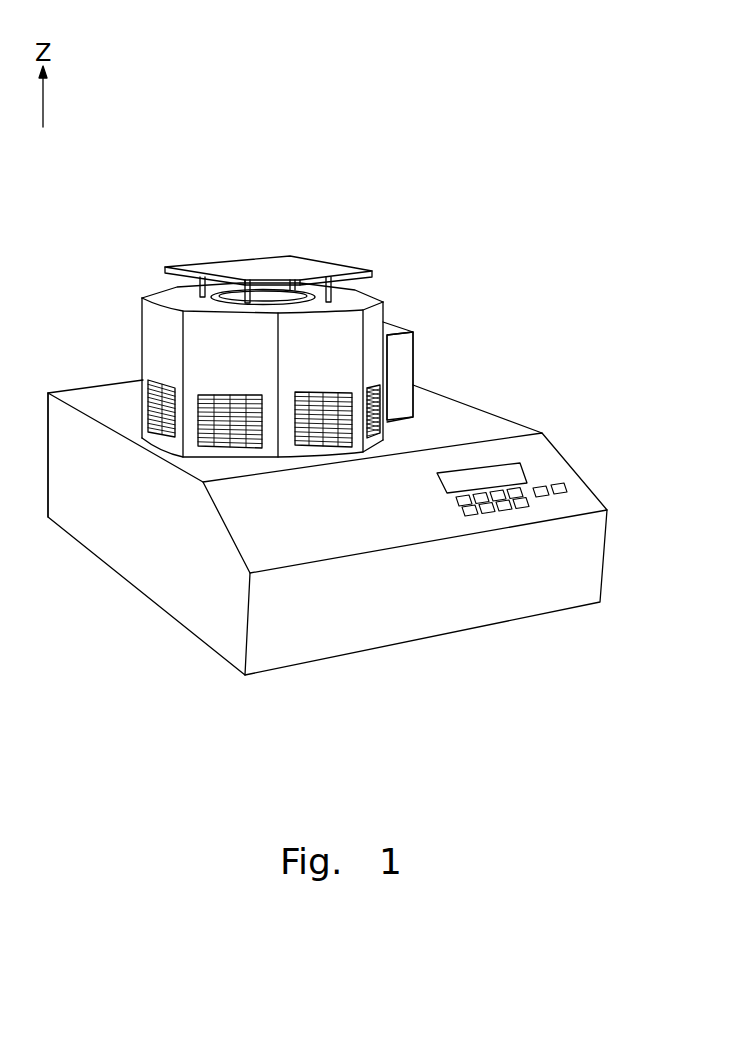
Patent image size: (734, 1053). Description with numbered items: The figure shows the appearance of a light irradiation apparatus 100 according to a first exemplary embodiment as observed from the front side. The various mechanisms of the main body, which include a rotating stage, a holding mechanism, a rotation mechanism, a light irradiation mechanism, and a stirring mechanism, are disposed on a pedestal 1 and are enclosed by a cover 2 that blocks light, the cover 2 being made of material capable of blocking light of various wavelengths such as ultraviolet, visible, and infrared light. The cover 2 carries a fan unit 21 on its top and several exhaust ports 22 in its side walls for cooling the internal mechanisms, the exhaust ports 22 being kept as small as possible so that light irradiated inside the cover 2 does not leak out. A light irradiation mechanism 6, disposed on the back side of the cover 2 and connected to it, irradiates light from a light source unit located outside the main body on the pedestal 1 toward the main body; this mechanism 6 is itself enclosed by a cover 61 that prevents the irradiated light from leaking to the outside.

The light irradiation apparatus 100 is at (333, 131).
The pedestal 1 is at (578, 445).
The cover 2 is at (321, 248).
The fan unit 21 is at (183, 298).
The exhaust port 22 is at (210, 393).
The light irradiation mechanism 6 is at (417, 317).
The cover 61 is at (412, 372).